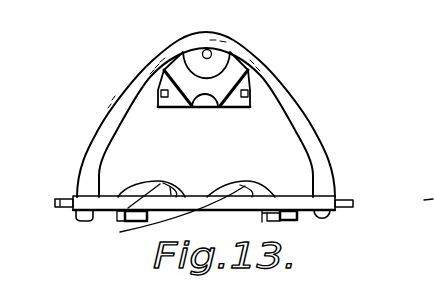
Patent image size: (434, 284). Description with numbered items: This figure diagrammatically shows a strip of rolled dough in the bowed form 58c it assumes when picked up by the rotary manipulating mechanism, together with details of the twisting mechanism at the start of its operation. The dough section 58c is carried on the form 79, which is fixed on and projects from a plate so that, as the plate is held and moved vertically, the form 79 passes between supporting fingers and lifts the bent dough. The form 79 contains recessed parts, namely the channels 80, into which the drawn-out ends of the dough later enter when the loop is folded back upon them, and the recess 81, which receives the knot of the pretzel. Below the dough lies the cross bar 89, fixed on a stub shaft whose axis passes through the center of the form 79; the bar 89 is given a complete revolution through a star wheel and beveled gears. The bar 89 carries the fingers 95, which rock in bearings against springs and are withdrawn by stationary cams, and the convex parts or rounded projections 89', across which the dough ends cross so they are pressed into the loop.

The bowed section of dough 58c is at (248, 80).
The recessed parts (channels) 80 is at (229, 77).
The form 79 is at (188, 108).
The recess 81 is at (211, 108).
The fingers 95 is at (56, 203).
The convex parts or rounded projections 89' is at (121, 233).
The cross bar 89 is at (312, 231).